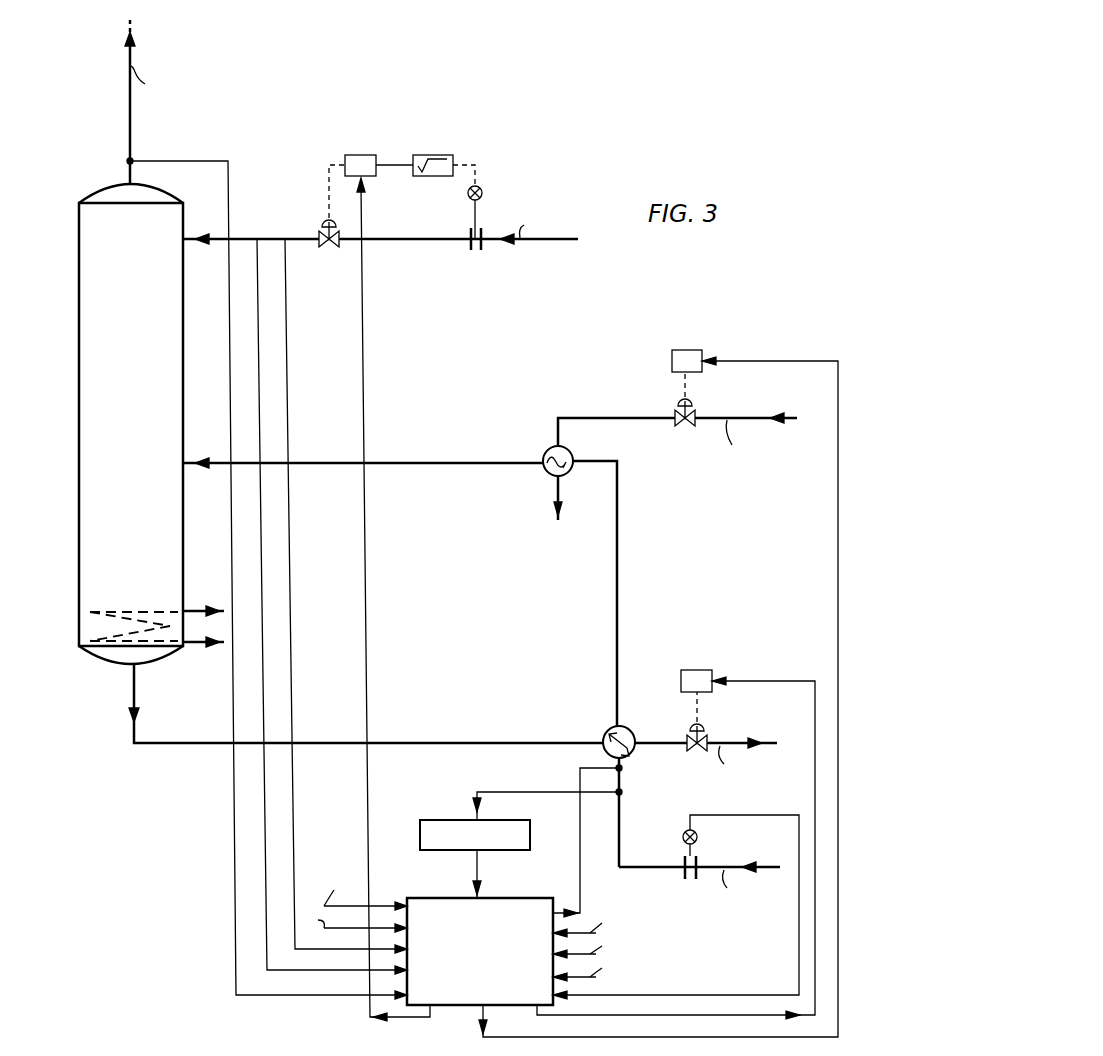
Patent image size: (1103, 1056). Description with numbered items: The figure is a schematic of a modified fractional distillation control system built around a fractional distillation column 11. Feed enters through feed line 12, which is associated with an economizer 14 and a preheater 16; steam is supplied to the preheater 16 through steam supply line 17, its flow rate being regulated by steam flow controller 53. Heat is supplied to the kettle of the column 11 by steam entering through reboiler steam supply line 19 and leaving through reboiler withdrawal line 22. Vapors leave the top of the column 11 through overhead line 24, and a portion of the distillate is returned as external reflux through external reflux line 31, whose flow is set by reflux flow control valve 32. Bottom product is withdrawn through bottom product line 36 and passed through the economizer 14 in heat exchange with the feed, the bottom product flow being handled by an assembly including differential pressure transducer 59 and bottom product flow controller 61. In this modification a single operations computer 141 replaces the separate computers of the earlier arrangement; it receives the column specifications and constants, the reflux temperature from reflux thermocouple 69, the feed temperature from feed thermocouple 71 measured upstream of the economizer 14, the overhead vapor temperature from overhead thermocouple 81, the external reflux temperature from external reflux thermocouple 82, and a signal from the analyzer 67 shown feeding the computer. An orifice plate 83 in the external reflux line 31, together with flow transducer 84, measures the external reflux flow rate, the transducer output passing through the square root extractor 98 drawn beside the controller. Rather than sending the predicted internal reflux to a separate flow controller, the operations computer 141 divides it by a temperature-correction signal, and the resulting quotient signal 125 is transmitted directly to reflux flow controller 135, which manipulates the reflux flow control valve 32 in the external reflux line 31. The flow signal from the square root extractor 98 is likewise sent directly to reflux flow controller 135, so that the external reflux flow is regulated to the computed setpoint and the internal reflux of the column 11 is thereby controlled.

The fractional distillation column 11 is at (79, 414).
The feed line 12 is at (699, 870).
The economizer 14 is at (604, 734).
The preheater 16 is at (546, 450).
The steam supply line 17 is at (760, 414).
The reboiler steam supply line 19 is at (214, 604).
The reboiler withdrawal line 22 is at (218, 636).
The overhead line 24 is at (130, 108).
The external reflux line 31 is at (521, 242).
The reflux flow control valve 32 is at (322, 226).
The bottom product line 36 is at (208, 742).
The steam flow controller 53 is at (672, 370).
The differential pressure transducer 59 is at (682, 840).
The bottom product flow controller 61 is at (712, 697).
The analyzer 67 is at (450, 820).
The reflux thermocouple 69 is at (287, 241).
The feed thermocouple 71 is at (624, 770).
The overhead thermocouple 81 is at (130, 161).
The external reflux thermocouple 82 is at (260, 235).
The orifice plate 83 is at (468, 250).
The flow transducer 84 is at (468, 200).
The square root extractor 98 is at (440, 155).
The quotient signal 125 is at (364, 478).
The reflux flow controller 135 is at (359, 155).
The operations computer 141 is at (520, 898).